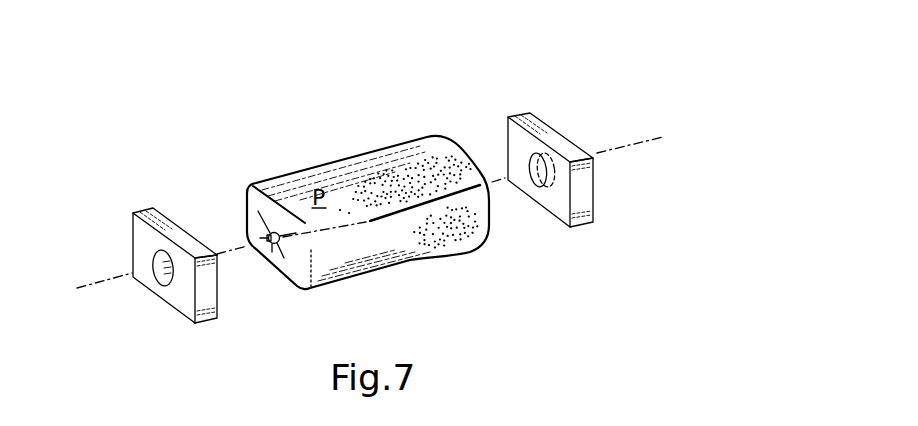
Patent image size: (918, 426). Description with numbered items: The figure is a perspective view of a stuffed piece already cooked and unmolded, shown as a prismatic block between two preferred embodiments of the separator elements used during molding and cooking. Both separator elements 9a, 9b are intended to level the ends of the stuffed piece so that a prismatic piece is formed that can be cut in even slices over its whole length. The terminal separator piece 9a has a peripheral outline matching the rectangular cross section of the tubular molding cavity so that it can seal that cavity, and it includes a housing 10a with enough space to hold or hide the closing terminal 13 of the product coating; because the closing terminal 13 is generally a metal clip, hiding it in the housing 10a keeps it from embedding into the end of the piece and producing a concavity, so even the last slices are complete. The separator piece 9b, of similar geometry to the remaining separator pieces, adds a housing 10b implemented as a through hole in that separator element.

The terminal separator piece 9a is at (566, 110).
The separator piece 9b is at (186, 197).
The housing 10a is at (537, 187).
The housing 10b is at (156, 284).
The closing terminal 13 is at (273, 232).